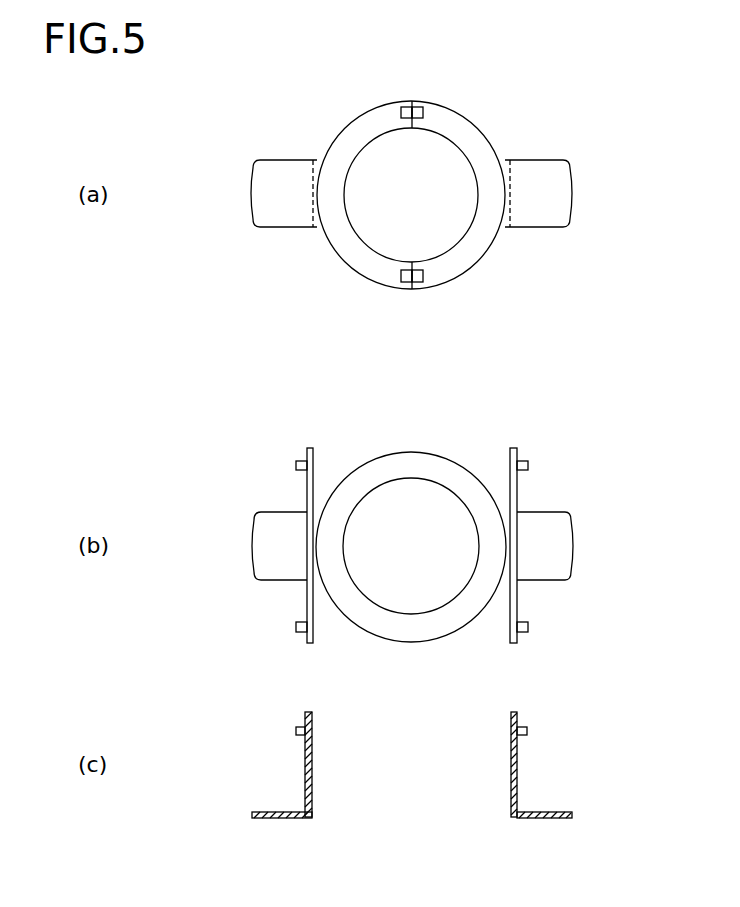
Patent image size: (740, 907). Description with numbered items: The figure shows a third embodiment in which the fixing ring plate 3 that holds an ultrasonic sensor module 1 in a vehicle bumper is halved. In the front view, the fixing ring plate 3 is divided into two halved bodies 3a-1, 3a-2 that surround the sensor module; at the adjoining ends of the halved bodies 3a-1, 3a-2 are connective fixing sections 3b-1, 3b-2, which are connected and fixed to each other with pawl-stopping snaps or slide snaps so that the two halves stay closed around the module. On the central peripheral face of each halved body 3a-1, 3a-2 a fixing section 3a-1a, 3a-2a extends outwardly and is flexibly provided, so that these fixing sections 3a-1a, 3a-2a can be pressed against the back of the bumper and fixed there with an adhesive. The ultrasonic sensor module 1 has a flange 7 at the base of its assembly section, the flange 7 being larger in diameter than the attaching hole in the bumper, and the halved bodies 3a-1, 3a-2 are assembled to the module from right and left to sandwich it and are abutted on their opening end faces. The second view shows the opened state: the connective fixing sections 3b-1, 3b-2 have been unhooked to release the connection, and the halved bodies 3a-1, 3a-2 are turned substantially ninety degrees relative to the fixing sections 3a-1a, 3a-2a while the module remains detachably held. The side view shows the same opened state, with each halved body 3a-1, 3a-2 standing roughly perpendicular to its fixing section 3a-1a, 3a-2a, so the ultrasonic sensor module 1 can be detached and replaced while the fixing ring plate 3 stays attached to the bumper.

The ultrasonic sensor module 1 is at (370, 238).
The fixing ring plate 3 is at (352, 118).
The flange 7 is at (385, 472).
The halved body 3a-1 is at (477, 138).
The halved body 3a-2 is at (342, 148).
The fixing section 3a-1a is at (558, 187).
The fixing section 3a-2a is at (272, 212).
The connective fixing section 3b-1 is at (425, 112).
The connective fixing section 3b-2 is at (405, 106).